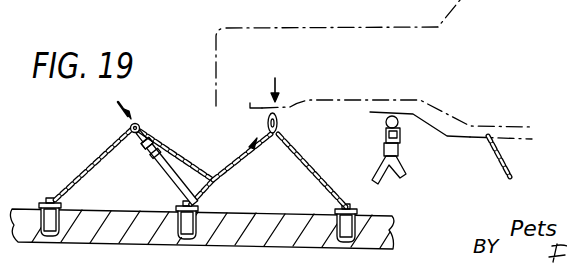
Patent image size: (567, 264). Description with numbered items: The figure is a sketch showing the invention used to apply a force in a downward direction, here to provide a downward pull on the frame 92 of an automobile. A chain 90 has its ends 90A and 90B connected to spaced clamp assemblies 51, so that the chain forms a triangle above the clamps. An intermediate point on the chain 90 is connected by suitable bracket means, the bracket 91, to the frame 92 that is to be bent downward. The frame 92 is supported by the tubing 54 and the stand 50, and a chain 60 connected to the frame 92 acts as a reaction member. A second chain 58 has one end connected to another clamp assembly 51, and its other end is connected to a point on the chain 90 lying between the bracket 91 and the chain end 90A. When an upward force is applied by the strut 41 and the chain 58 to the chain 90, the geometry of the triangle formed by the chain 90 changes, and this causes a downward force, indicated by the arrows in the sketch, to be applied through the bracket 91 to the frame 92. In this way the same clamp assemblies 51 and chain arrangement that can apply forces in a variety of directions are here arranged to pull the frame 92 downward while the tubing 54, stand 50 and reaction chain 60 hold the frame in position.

The second chain 58 is at (143, 130).
The strut 41 is at (158, 163).
The chain end 90A is at (185, 197).
The clamp assemblies 51 is at (60, 204).
The chain 90 is at (234, 168).
The bracket 91 is at (296, 108).
The frame 92 is at (375, 101).
The tubing 54 is at (400, 126).
The stand 50 is at (403, 154).
The chain 60 is at (506, 157).
The chain end 90B is at (352, 204).